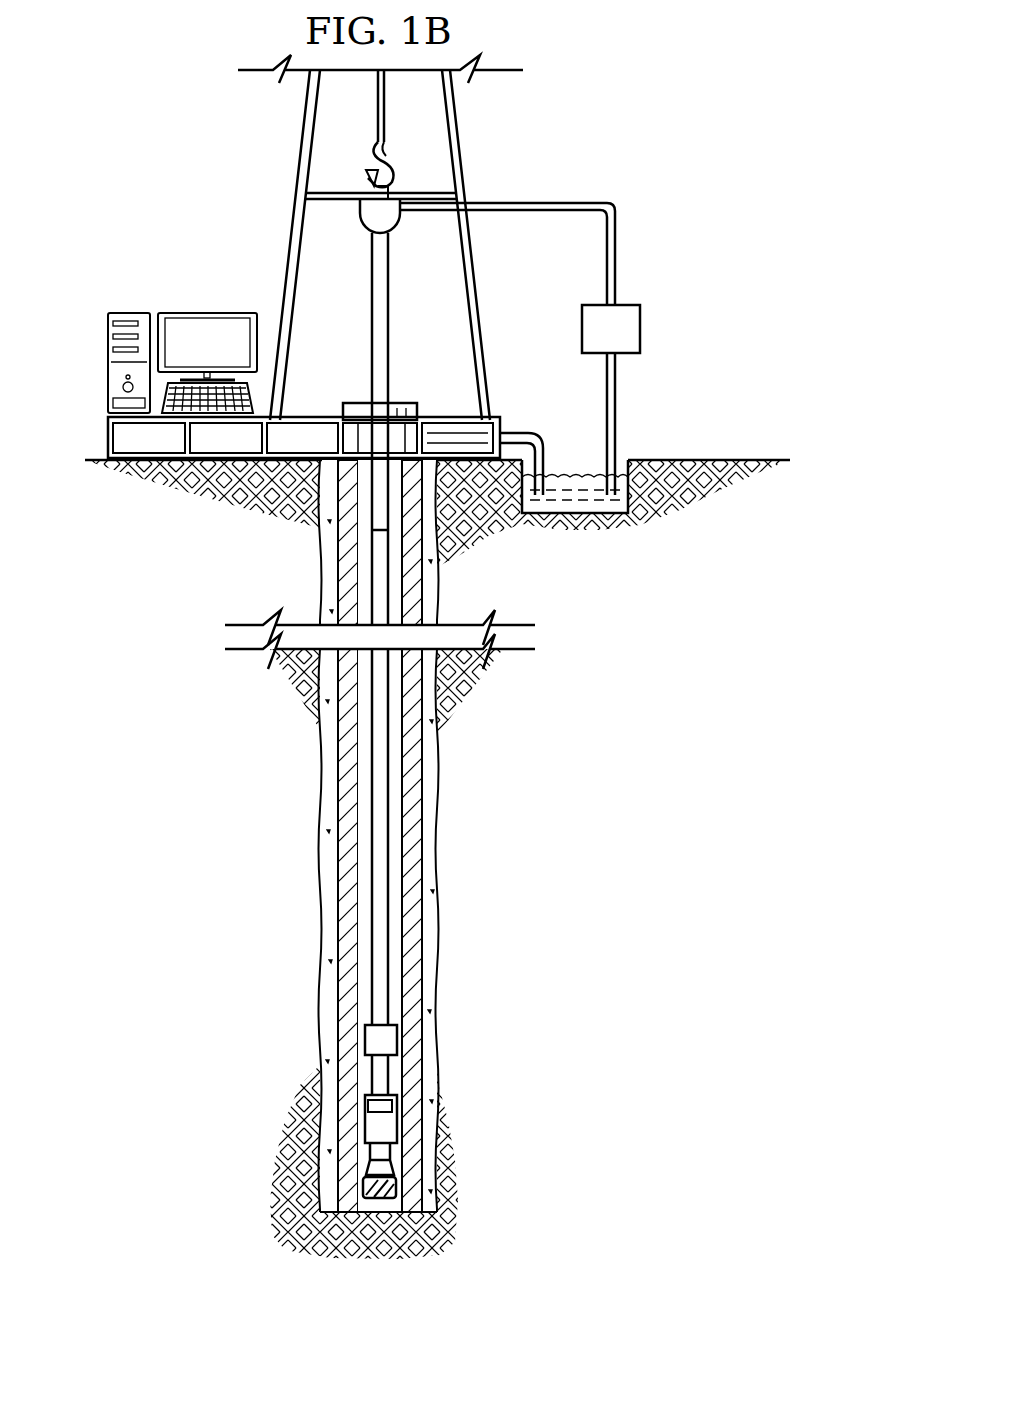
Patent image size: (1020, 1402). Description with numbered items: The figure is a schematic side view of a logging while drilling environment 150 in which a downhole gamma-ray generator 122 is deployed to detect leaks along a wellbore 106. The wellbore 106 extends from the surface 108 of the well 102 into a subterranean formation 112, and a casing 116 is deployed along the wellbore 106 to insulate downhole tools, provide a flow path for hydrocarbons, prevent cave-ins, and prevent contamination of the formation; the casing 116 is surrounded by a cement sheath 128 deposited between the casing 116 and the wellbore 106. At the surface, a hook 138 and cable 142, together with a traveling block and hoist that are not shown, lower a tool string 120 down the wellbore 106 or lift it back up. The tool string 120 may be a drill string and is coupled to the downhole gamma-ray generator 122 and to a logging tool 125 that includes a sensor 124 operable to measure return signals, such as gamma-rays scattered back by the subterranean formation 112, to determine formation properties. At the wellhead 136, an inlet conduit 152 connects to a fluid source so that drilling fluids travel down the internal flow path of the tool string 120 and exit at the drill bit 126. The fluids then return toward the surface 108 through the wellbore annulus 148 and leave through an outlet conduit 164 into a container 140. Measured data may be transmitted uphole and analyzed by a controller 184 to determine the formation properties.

The well 102 is at (412, 392).
The wellbore 106 is at (440, 808).
The surface 108 is at (728, 460).
The subterranean formation 112 is at (648, 744).
The casing 116 is at (414, 886).
The tool string 120 is at (370, 812).
The downhole gamma-ray generator 122 is at (365, 1042).
The sensor 124 is at (372, 1105).
The logging tool 125 is at (390, 1127).
The drill bit 126 is at (395, 1185).
The cement sheath 128 is at (433, 765).
The wellhead 136 is at (355, 403).
The hook 138 is at (397, 168).
The container 140 is at (570, 505).
The cable 142 is at (376, 128).
The wellbore annulus 148 is at (365, 927).
The logging while drilling environment 150 is at (220, 215).
The inlet conduit 152 is at (580, 203).
The outlet conduit 164 is at (513, 436).
The controller 184 is at (128, 312).